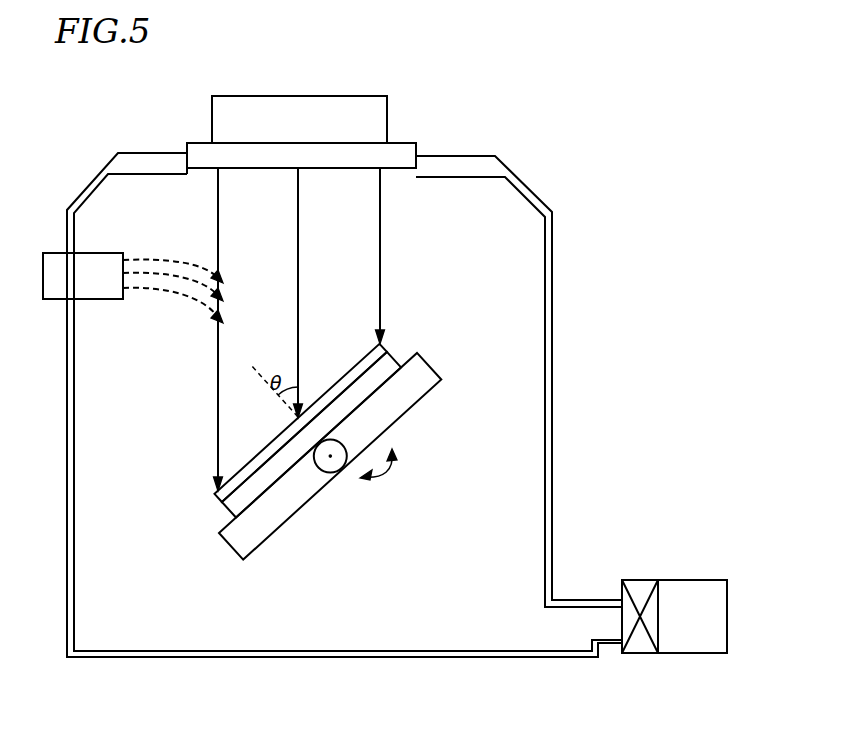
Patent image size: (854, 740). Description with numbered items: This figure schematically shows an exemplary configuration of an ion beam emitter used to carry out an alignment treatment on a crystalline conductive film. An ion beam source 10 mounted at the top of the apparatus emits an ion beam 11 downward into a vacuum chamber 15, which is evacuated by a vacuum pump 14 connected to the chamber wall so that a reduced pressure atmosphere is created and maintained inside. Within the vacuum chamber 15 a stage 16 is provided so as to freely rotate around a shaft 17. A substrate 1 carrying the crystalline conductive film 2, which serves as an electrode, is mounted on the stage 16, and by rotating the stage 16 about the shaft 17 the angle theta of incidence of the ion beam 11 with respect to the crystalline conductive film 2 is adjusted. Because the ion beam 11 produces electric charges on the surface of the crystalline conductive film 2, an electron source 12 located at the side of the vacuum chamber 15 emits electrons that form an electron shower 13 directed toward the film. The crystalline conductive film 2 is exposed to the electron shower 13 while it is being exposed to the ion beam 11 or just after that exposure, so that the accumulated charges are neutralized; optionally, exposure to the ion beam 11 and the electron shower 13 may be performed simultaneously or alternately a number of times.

The substrate 1 is at (388, 368).
The crystalline conductive film 2 is at (382, 350).
The ion beam source 10 is at (373, 117).
The ion beam 11 is at (380, 237).
The electron source 12 is at (100, 297).
The electron shower 13 is at (165, 290).
The vacuum pump 14 is at (683, 588).
The vacuum chamber 15 is at (552, 360).
The stage 16 is at (397, 410).
The shaft 17 is at (328, 467).